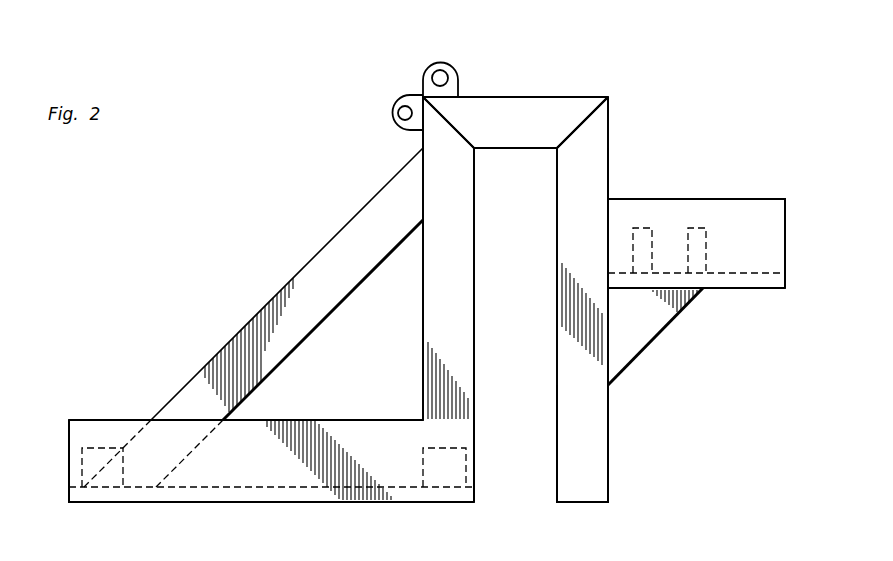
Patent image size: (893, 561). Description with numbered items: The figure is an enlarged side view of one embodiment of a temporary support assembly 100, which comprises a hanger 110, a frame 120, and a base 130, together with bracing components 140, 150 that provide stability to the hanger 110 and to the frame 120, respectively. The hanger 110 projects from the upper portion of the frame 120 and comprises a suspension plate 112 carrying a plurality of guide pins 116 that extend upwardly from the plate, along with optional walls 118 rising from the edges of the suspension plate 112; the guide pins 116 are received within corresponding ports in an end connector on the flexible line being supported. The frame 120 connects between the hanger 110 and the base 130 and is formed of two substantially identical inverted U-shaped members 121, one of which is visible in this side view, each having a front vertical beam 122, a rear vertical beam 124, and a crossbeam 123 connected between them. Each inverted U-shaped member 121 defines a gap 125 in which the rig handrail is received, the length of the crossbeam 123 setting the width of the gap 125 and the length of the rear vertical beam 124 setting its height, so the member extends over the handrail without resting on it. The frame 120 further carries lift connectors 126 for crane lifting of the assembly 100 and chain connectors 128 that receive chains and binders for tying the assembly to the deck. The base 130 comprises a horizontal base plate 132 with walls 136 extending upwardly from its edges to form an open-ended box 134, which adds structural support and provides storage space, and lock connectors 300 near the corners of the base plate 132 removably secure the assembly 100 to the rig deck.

The temporary support assembly 100 is at (670, 53).
The hanger 110 is at (786, 227).
The suspension plate 112 is at (760, 273).
The guide pins 116 is at (697, 228).
The walls 118 is at (752, 213).
The frame 120 is at (509, 97).
The inverted U-shaped member 121 is at (598, 138).
The front vertical beam 122 is at (600, 469).
The crossbeam 123 is at (573, 106).
The rear vertical beam 124 is at (432, 300).
The gap 125 is at (518, 414).
The lift connectors 126 is at (441, 61).
The chain connectors 128 is at (391, 113).
The base 130 is at (116, 420).
The horizontal base plate 132 is at (460, 497).
The open-ended box 134 is at (69, 437).
The walls 136 is at (277, 473).
The bracing component 140 is at (650, 347).
The bracing component 150 is at (312, 277).
The lock connectors 300 is at (84, 465).